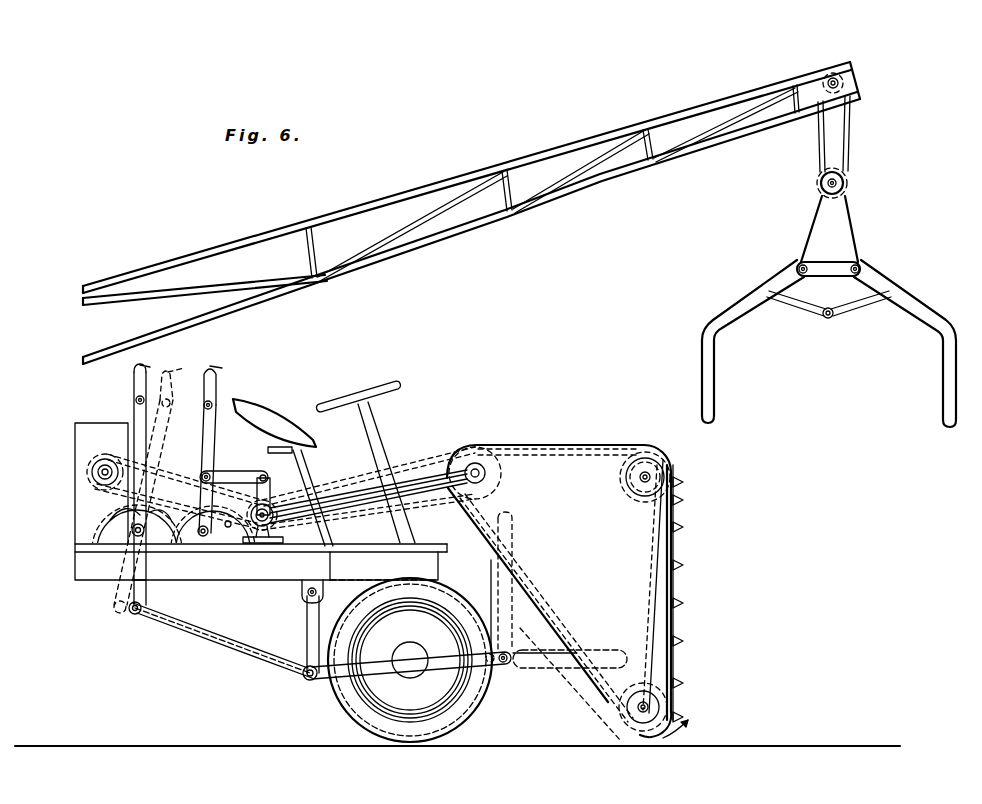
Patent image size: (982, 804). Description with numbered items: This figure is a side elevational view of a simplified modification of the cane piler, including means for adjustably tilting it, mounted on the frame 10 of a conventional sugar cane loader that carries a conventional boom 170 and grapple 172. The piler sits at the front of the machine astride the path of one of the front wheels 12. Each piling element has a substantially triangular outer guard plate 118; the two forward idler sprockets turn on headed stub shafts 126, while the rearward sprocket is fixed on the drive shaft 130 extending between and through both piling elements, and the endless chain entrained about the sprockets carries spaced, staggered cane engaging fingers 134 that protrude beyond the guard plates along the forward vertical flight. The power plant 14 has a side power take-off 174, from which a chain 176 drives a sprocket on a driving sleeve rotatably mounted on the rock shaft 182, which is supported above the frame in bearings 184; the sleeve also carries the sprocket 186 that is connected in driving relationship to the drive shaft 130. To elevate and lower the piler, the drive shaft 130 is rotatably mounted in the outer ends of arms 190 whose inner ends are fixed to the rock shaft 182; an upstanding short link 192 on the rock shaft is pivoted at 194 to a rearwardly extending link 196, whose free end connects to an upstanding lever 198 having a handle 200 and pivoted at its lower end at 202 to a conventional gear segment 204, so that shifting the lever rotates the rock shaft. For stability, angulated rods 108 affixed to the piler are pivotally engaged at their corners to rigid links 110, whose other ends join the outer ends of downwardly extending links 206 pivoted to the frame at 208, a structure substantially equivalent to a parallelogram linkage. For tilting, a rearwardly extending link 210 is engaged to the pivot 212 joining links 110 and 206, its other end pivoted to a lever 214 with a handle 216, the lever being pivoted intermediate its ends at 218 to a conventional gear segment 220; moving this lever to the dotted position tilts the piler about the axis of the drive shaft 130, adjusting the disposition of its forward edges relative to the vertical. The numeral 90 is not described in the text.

The frame 10 is at (102, 566).
The front wheel 12 is at (367, 712).
The power plant 14 is at (92, 447).
The conveyor 90 is at (686, 547).
The angulated rods 108 is at (543, 665).
The rigid links 110 is at (445, 665).
The outer guard plate 118 is at (597, 473).
The headed stub shafts 126 is at (652, 474).
The drive shaft 130 is at (478, 466).
The cane engaging fingers 134 is at (676, 642).
The boom 170 is at (619, 129).
The grapple 172 is at (864, 250).
The side power take-off 174 is at (93, 481).
The chain 176 is at (133, 423).
The rock shaft 182 is at (263, 527).
The bearings 184 is at (250, 519).
The sprocket 186 is at (268, 504).
The arms 190 is at (415, 480).
The short link 192 is at (266, 478).
The pivot 194 is at (248, 471).
The rearwardly extending link 196 is at (210, 472).
The lever 198 is at (218, 427).
The handle 200 is at (212, 376).
The pivot 202 is at (201, 537).
The gear segment 204 is at (228, 528).
The downwardly extending links 206 is at (309, 642).
The pivot 208 is at (303, 584).
The rearwardly extending link 210 is at (222, 648).
The pivot 212 is at (309, 681).
The lever 214 is at (138, 596).
The handle 216 is at (158, 372).
The pivot 218 is at (128, 534).
The gear segment 220 is at (112, 513).